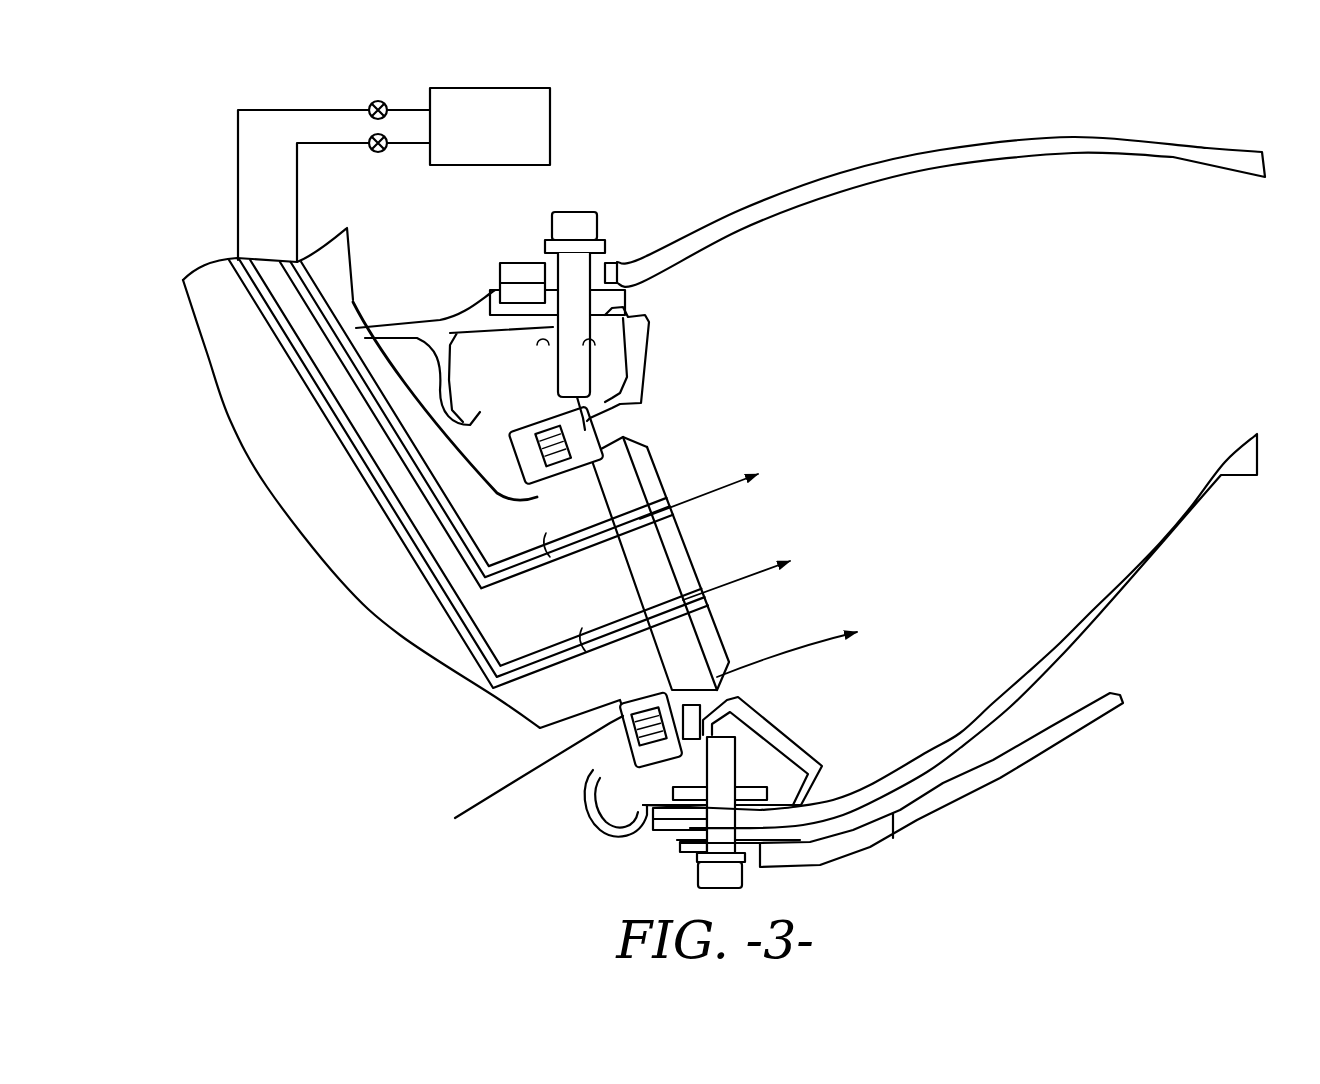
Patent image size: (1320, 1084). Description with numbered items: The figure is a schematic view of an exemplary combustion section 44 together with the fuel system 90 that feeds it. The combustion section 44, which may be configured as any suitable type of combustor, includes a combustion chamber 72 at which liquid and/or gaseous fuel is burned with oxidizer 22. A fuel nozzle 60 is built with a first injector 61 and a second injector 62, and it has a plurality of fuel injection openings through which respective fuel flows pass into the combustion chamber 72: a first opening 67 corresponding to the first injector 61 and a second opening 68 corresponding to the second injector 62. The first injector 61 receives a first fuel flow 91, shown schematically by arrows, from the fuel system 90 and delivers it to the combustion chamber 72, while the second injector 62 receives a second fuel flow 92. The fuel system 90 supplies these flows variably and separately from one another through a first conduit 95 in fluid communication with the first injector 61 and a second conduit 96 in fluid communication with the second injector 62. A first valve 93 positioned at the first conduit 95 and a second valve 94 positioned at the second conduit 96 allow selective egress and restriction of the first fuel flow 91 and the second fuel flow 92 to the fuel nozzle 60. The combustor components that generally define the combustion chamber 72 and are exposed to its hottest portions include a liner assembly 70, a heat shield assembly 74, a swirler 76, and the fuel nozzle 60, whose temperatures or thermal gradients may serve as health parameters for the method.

The oxidizer 22 is at (518, 795).
The combustion section 44 is at (806, 121).
The fuel nozzle 60 is at (258, 422).
The first injector 61 is at (263, 320).
The second injector 62 is at (347, 299).
The first opening 67 is at (711, 586).
The second opening 68 is at (674, 497).
The liner assembly 70 is at (947, 163).
The combustion chamber 72 is at (982, 407).
The heat shield assembly 74 is at (667, 362).
The swirler 76 is at (512, 417).
The fuel system 90 is at (488, 87).
The first fuel flow 91 is at (247, 108).
The second fuel flow 92 is at (327, 148).
The first valve 93 is at (375, 98).
The second valve 94 is at (377, 157).
The first conduit 95 is at (226, 213).
The second conduit 96 is at (288, 140).